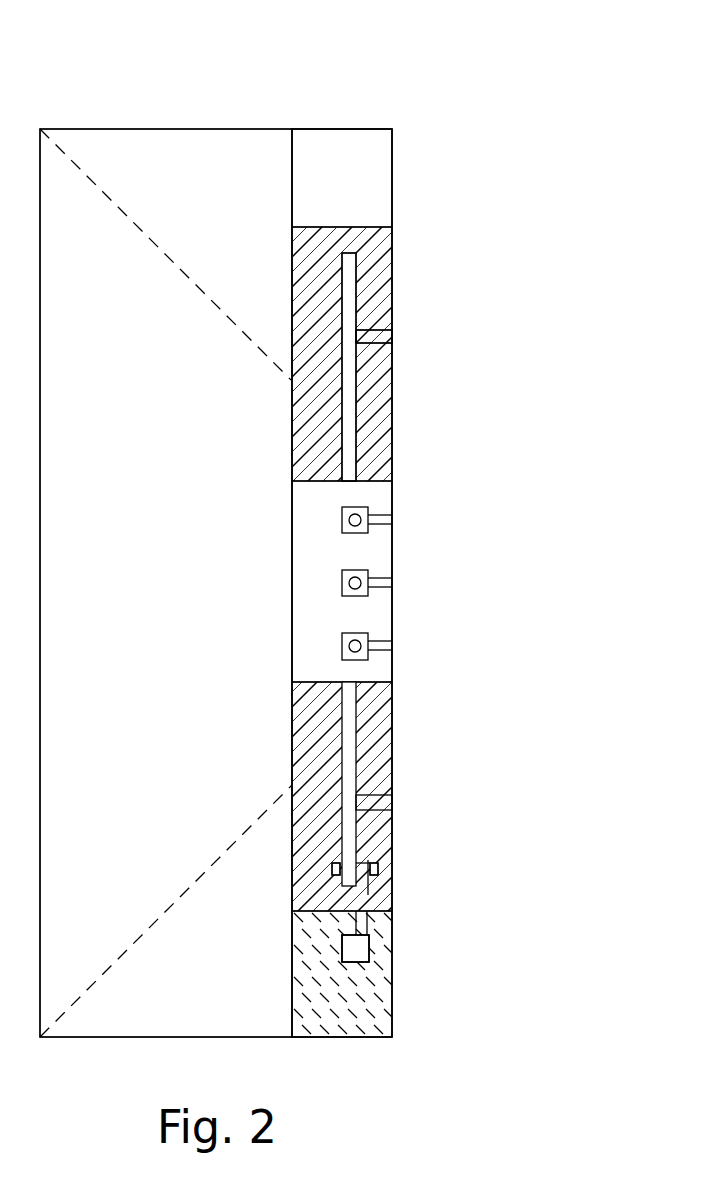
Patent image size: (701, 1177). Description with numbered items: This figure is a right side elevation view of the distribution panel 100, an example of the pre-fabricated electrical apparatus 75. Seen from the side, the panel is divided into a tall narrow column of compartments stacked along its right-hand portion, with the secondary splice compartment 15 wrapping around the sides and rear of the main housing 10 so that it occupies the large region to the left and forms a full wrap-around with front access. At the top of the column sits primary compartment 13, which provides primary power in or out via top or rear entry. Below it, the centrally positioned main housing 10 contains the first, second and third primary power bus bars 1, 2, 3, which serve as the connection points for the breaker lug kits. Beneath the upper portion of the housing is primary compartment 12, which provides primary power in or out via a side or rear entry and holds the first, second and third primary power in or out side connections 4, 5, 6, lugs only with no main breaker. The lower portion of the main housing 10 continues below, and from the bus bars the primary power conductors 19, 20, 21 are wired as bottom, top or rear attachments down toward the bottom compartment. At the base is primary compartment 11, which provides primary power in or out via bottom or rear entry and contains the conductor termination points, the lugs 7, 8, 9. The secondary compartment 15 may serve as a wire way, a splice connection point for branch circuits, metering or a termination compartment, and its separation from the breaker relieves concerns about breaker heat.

The pre-fabricated electrical apparatus 75 is at (221, 523).
The secondary splice compartment 15 is at (247, 208).
The primary compartment 13 is at (344, 185).
The first primary power bus bar 1 is at (357, 373).
The second primary power bus bar 2 is at (349, 367).
The third primary power bus bar 3 is at (374, 336).
The primary compartment 12 is at (334, 573).
The first primary power in/out connection 4 is at (360, 507).
The second primary power in/out connection 5 is at (360, 570).
The third primary power in/out connection 6 is at (365, 633).
The distribution panel 100 is at (397, 677).
The main housing 10 is at (336, 789).
The primary power conductor 19 is at (365, 897).
The primary power conductor 20 is at (336, 869).
The primary power conductor 21 is at (374, 869).
The primary compartment 11 is at (369, 1008).
The first primary power lug 7 is at (352, 950).
The second primary power lug 8 is at (355, 948).
The third primary power lug 9 is at (355, 948).